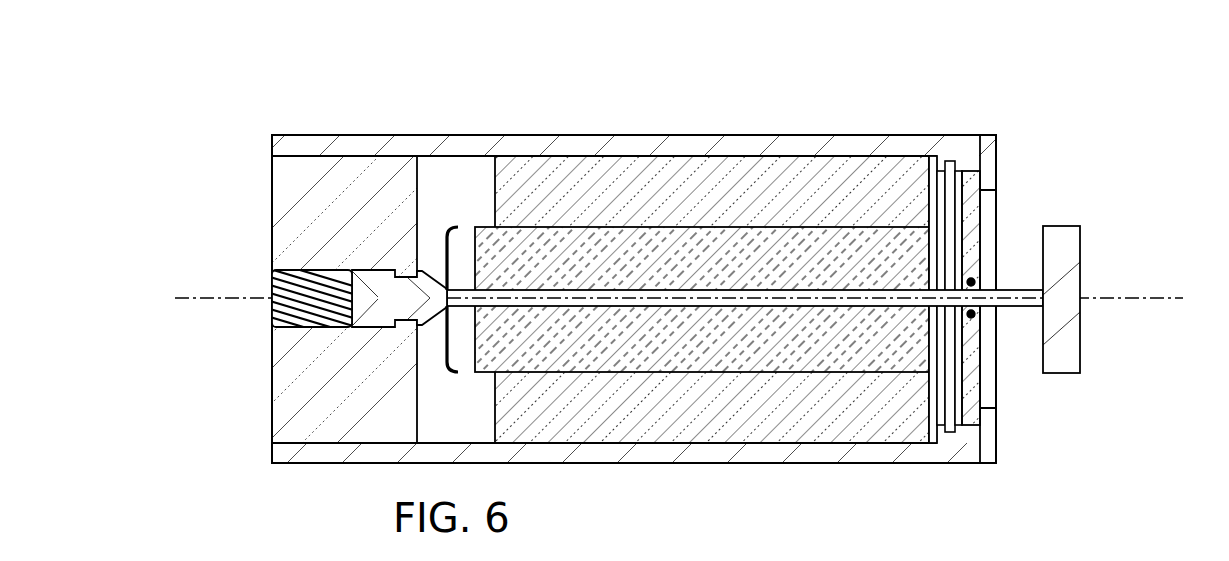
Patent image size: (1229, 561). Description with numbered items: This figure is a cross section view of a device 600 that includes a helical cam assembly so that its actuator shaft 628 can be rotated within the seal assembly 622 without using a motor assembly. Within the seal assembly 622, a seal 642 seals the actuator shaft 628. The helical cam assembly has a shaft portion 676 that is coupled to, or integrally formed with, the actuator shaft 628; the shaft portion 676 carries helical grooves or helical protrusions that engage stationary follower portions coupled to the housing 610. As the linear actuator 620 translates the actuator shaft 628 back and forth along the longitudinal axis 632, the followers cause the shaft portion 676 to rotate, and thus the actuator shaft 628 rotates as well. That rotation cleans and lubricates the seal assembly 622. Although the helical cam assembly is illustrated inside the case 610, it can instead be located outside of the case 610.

The device 600 is at (1060, 64).
The housing 610 is at (528, 135).
The linear actuator 620 is at (442, 263).
The seal assembly 622 is at (972, 185).
The actuator shaft 628 is at (1013, 294).
The longitudinal axis 632 is at (1147, 298).
The seal 642 is at (972, 278).
The shaft portion 676 is at (332, 327).